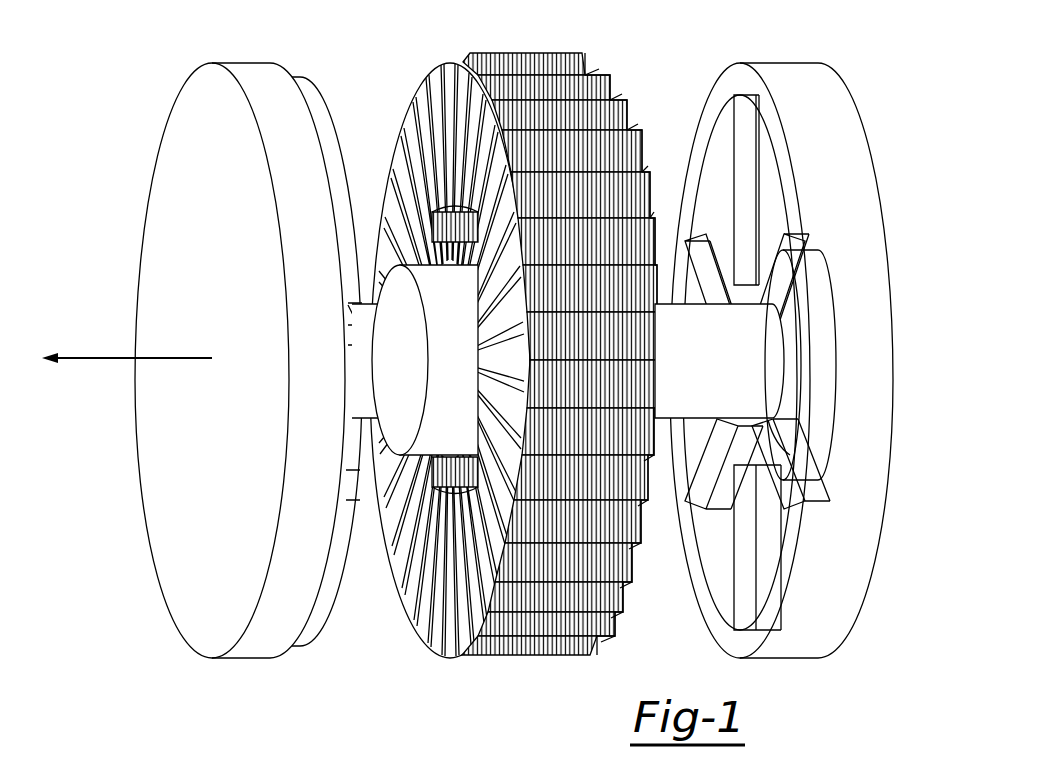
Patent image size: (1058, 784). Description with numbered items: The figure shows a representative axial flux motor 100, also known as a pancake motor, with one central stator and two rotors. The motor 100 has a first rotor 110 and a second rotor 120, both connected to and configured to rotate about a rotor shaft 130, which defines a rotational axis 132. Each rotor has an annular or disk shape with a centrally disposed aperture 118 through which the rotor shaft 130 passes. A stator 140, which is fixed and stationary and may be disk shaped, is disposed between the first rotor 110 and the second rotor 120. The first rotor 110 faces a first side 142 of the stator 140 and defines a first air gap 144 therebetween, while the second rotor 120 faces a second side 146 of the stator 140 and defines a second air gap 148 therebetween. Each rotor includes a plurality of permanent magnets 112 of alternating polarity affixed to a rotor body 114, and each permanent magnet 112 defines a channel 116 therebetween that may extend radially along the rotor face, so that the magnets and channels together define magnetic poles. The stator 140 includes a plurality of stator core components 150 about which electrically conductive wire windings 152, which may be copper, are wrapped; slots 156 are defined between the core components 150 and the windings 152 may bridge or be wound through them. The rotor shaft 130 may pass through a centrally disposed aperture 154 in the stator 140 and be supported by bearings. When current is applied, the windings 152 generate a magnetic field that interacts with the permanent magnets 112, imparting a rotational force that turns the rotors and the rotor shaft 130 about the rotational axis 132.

The axial flux motor 100 is at (145, 68).
The first rotor 110 is at (238, 62).
The permanent magnets 112 is at (820, 192).
The rotor body 114 is at (185, 155).
The channel 116 is at (823, 328).
The centrally disposed aperture 118 is at (770, 448).
The second rotor 120 is at (798, 62).
The rotor shaft 130 is at (743, 330).
The rotational axis 132 is at (88, 358).
The stator 140 is at (403, 113).
The first side 142 is at (393, 127).
The first air gap 144 is at (330, 90).
The second side 146 is at (645, 115).
The second air gap 148 is at (693, 95).
The stator core components 150 is at (443, 73).
The electrically conductive wire windings 152 is at (537, 80).
The centrally disposed aperture 154 is at (448, 472).
The slots 156 is at (624, 115).